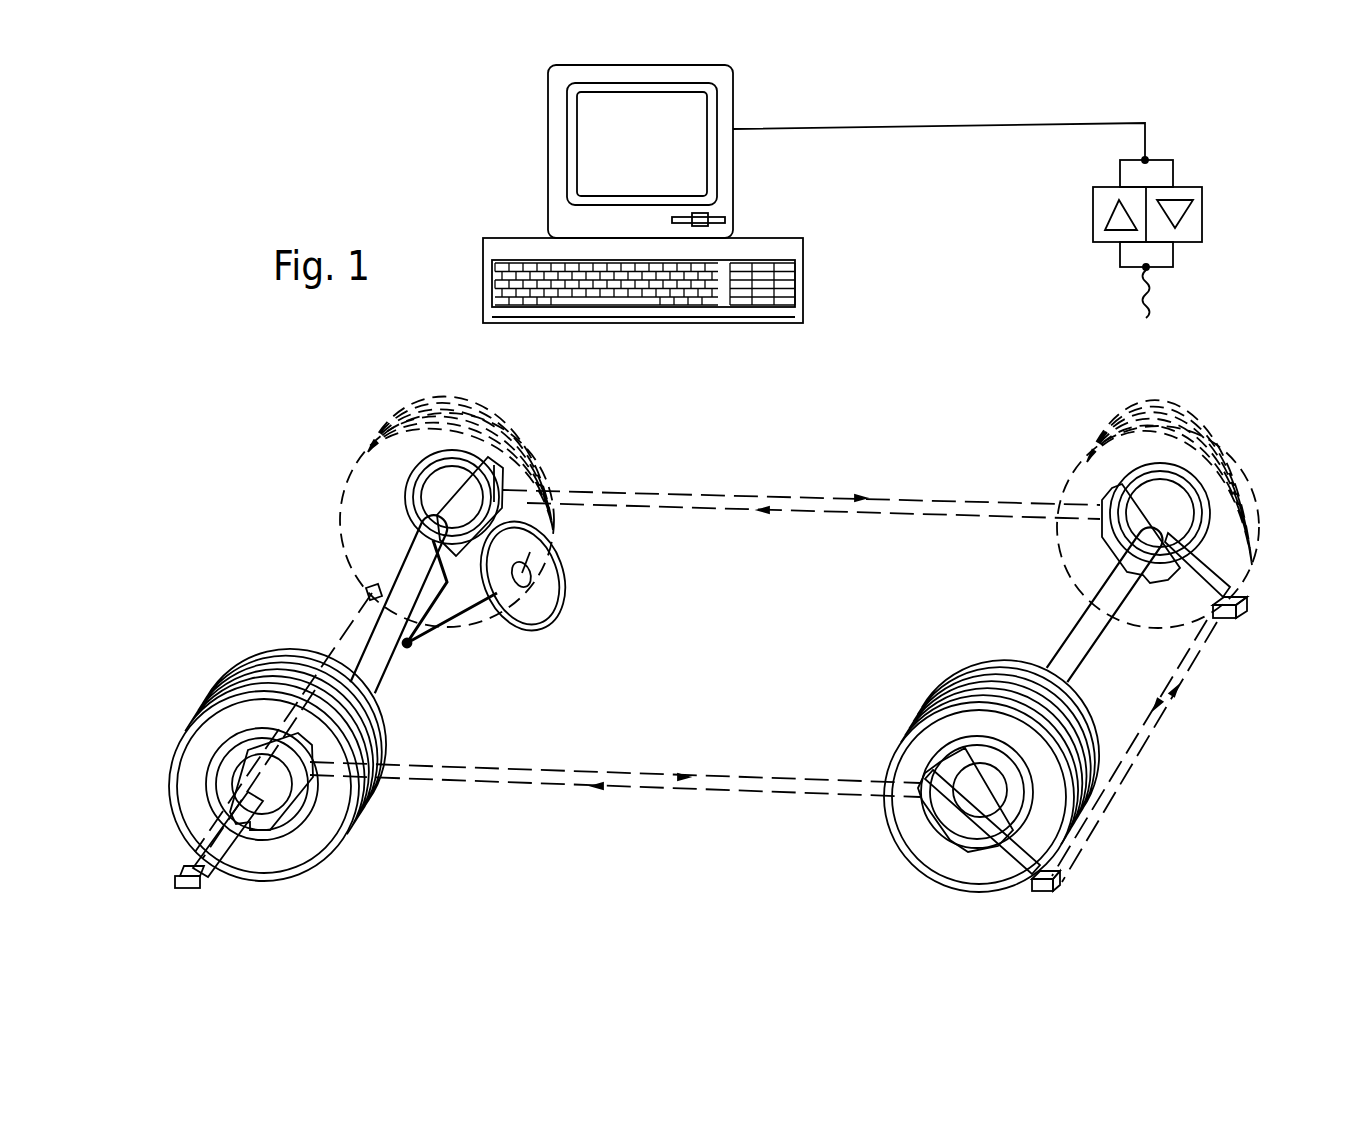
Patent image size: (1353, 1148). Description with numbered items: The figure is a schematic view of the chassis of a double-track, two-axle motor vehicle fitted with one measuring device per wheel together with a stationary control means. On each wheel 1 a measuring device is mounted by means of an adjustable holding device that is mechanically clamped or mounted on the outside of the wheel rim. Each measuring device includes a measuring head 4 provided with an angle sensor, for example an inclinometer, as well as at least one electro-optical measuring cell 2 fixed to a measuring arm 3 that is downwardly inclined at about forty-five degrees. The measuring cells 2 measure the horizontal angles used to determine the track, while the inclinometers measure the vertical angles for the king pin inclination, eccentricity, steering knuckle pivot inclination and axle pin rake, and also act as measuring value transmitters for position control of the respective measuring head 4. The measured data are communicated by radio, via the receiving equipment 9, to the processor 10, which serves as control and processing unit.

The wheel 1 is at (366, 455).
The electro-optical measuring cell 2 is at (368, 595).
The measuring arm 3 is at (223, 845).
The measuring head 4 is at (505, 478).
The receiving equipment 9 is at (1107, 247).
The processor 10 is at (752, 194).